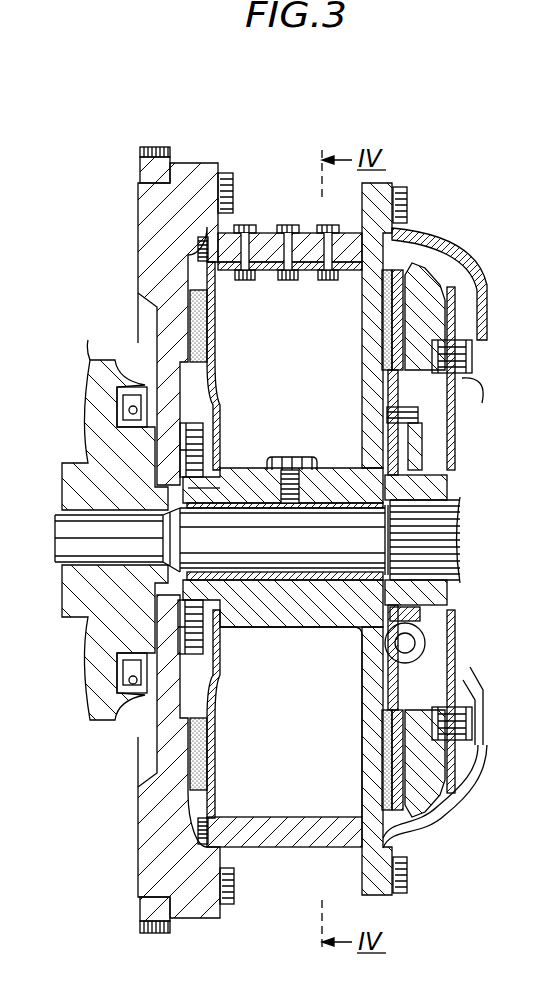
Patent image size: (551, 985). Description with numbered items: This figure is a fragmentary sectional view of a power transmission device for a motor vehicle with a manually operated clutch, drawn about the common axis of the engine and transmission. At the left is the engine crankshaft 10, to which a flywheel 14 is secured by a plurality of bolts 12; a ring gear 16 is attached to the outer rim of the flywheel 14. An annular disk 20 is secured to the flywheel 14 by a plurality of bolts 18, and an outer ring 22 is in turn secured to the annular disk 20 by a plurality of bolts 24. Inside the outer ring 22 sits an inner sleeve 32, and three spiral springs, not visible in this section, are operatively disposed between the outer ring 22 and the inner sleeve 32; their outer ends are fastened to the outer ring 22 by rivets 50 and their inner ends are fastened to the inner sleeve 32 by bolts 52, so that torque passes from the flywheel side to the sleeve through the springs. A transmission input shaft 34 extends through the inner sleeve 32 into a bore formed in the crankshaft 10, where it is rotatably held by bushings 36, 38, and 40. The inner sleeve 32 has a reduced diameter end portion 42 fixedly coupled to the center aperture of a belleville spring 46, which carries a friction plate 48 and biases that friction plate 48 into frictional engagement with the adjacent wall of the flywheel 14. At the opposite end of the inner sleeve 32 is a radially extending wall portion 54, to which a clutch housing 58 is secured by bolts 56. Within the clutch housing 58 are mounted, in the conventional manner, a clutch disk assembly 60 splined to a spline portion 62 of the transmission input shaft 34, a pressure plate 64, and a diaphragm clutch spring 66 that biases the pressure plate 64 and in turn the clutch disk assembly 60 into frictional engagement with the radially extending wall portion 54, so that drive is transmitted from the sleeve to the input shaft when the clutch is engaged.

The engine crankshaft 10 is at (88, 600).
The bolts 12 is at (195, 453).
The flywheel 14 is at (143, 251).
The ring gear 16 is at (148, 172).
The bolts 18 is at (230, 195).
The annular disk 20 is at (220, 853).
The outer ring 22 is at (270, 238).
The bolts 24 is at (200, 246).
The inner sleeve 32 is at (304, 612).
The transmission input shaft 34 is at (349, 555).
The bushing 36 is at (112, 502).
The bushing 38 is at (263, 600).
The bushing 40 is at (327, 468).
The reduced diameter end portion 42 is at (170, 535).
The belleville spring 46 is at (214, 410).
The friction plate 48 is at (201, 323).
The rivets 50 is at (328, 283).
The bolts 52 is at (291, 458).
The radially extending wall portion 54 is at (378, 258).
The bolts 56 is at (408, 208).
The clutch housing 58 is at (460, 812).
The clutch disk assembly 60 is at (400, 398).
The spline portion 62 is at (456, 522).
The pressure plate 64 is at (433, 292).
The diaphragm clutch spring 66 is at (457, 455).